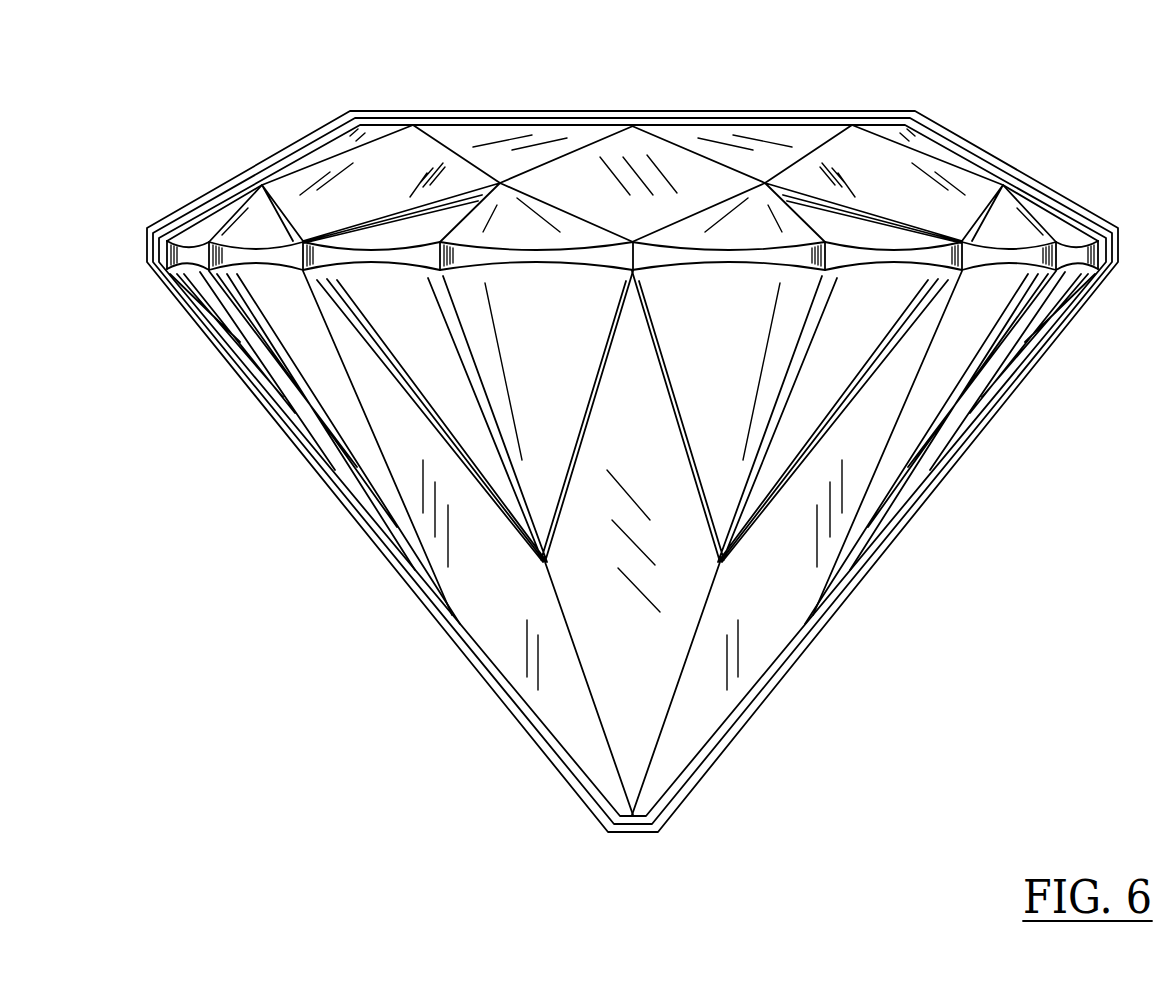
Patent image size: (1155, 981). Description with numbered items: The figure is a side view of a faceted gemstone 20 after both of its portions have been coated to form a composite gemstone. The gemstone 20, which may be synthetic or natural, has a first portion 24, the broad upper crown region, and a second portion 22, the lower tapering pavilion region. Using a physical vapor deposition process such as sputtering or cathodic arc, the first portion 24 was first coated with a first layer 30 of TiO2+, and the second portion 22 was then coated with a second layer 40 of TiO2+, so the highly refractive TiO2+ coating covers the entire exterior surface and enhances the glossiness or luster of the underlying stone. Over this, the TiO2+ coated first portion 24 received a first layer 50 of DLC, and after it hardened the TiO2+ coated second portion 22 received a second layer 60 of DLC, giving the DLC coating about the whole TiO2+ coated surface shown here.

The gemstone 20 is at (632, 422).
The second portion 22 is at (755, 628).
The first portion 24 is at (632, 128).
The first layer 30 is at (987, 165).
The second layer 40 is at (717, 743).
The first layer 50 is at (271, 163).
The second layer 60 is at (378, 553).